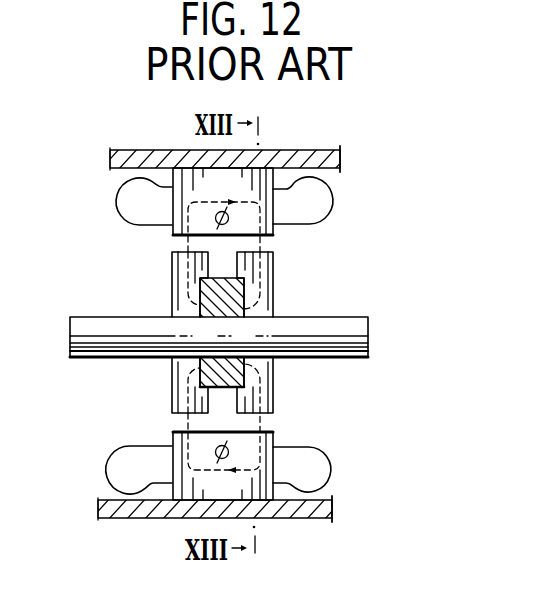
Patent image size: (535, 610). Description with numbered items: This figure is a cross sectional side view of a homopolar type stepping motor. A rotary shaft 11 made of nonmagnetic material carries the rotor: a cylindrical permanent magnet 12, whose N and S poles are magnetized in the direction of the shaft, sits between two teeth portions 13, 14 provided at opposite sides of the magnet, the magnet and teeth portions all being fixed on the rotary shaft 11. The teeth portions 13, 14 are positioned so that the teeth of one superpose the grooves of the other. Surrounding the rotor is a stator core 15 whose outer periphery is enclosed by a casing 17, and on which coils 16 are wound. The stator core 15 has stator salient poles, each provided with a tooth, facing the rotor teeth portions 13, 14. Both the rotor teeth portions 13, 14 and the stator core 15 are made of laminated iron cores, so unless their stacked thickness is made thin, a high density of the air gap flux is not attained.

The rotary shaft 11 is at (368, 336).
The permanent magnet 12 is at (221, 278).
The teeth portion 13 is at (273, 283).
The teeth portion 14 is at (172, 283).
The stator core 15 is at (176, 181).
The coils 16 is at (117, 199).
The casing 17 is at (318, 160).